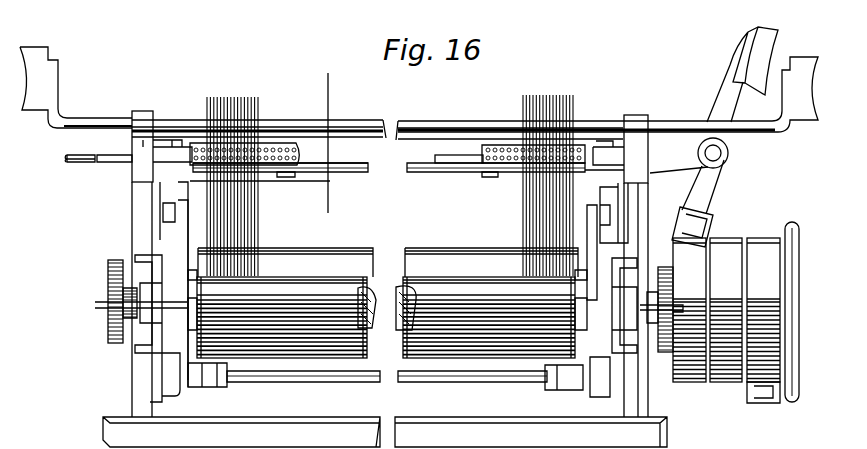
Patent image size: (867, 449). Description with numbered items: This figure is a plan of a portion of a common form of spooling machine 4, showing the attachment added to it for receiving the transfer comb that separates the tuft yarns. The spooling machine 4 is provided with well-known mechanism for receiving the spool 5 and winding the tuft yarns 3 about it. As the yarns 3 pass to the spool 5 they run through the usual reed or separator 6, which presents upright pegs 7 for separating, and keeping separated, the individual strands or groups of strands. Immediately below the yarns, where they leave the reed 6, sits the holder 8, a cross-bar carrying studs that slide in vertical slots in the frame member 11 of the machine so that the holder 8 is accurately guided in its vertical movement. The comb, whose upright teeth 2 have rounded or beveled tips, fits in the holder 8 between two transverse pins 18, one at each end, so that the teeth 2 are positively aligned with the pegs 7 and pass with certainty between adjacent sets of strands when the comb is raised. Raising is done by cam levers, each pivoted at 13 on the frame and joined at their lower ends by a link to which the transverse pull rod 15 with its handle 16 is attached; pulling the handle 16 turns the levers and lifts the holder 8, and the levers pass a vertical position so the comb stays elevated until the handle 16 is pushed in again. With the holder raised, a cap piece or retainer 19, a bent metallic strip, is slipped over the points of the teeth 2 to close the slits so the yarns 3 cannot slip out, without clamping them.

The upright teeth 2 is at (357, 167).
The yarns 3 is at (222, 107).
The spooling machine 4 is at (405, 388).
The spool 5 is at (373, 300).
The reed or separator 6 is at (283, 143).
The upright pegs 7 is at (263, 147).
The holder 8 is at (432, 171).
The frame member 11 is at (345, 165).
The pivot 13 is at (279, 178).
The transverse pull rod 15 is at (107, 155).
The handle 16 is at (67, 158).
The transverse pins 18 is at (362, 199).
The cap piece or retainer 19 is at (285, 192).